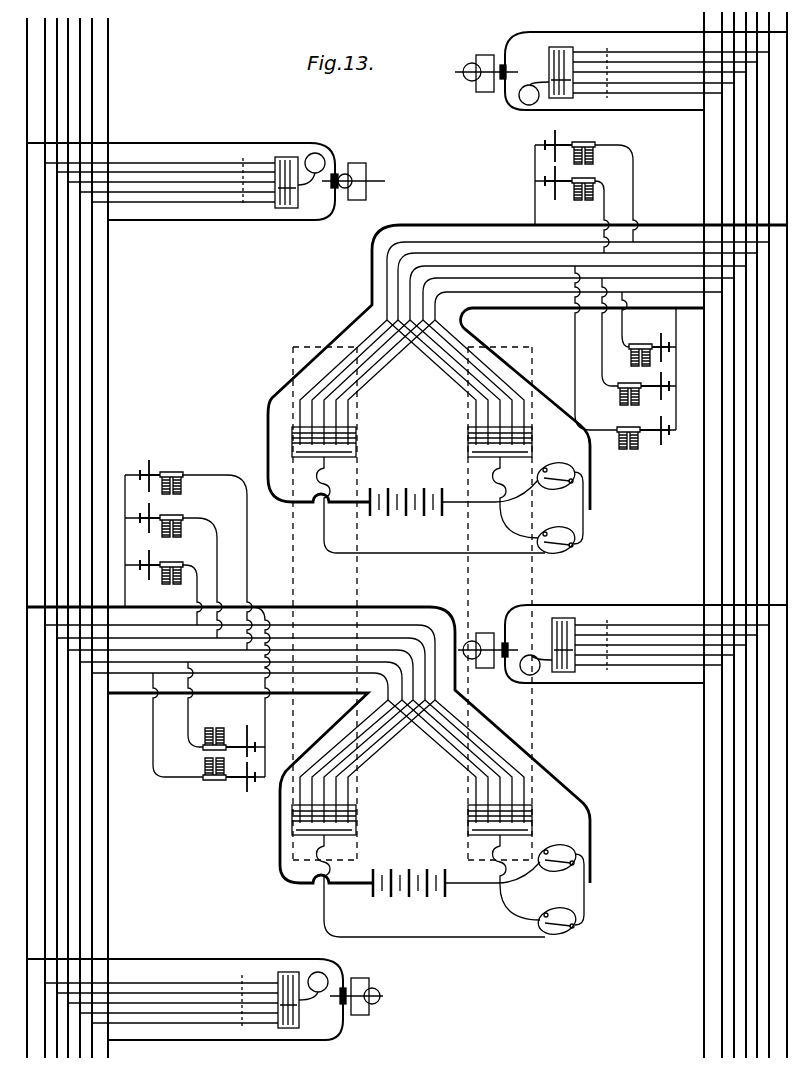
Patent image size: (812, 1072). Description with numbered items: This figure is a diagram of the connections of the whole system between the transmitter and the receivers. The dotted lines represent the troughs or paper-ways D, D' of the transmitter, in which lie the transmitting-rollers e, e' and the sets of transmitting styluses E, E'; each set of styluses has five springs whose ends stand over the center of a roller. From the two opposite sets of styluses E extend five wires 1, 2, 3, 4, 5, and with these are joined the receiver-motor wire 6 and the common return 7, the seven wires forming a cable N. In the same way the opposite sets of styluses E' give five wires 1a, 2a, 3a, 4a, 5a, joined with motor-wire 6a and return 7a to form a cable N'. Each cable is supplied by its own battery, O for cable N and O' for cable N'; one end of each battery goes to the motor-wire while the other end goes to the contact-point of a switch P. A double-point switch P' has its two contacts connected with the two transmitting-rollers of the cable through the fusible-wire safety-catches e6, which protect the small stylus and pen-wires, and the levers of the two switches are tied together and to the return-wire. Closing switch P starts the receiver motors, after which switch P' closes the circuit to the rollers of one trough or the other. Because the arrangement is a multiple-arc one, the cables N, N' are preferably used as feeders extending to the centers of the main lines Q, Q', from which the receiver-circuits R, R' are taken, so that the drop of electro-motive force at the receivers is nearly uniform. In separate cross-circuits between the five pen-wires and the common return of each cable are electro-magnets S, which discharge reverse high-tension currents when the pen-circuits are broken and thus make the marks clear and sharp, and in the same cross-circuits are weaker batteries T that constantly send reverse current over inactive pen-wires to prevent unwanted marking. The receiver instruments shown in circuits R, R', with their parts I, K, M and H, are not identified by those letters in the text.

The receiver-circuit R is at (185, 579).
The receiver-circuit R' is at (646, 344).
The indicator coil I is at (417, 530).
The keyboard / contact box K is at (423, 534).
The motor M is at (425, 541).
The hand wheel / dial H is at (420, 535).
The main line Q is at (77, 538).
The main line Q' is at (727, 535).
The cable N is at (311, 596).
The cable N' is at (664, 211).
The wire 1 is at (240, 681).
The wire 2 is at (241, 675).
The wire 3 is at (240, 668).
The wire 4 is at (241, 662).
The wire 5 is at (240, 656).
The receiver-motor wire 6 is at (241, 781).
The common return 7 is at (308, 739).
The wire 1a is at (578, 275).
The wire 2a is at (577, 282).
The wire 3a is at (578, 288).
The wire 4a is at (578, 294).
The wire 5a is at (578, 301).
The motor-wire 6a is at (527, 355).
The return 7a is at (582, 409).
The electro-magnet S is at (403, 461).
The battery T is at (400, 455).
The transmitting styluses E is at (417, 805).
The transmitting styluses E' is at (416, 426).
The transmitting-roller e is at (334, 819).
The transmitting-roller e' is at (422, 629).
The fusible-wire safety-catch e6 is at (422, 697).
The battery O is at (456, 869).
The battery O' is at (454, 488).
The switch P is at (559, 684).
The double-point switch P' is at (557, 723).
The trough D is at (335, 603).
The trough D' is at (516, 603).